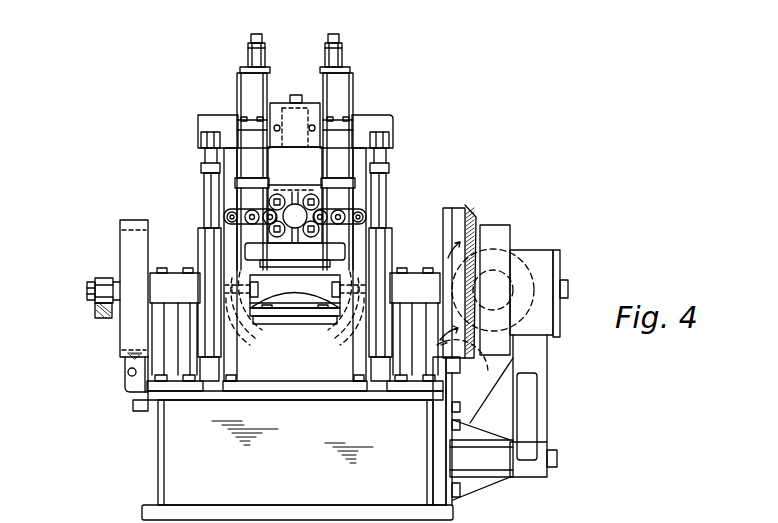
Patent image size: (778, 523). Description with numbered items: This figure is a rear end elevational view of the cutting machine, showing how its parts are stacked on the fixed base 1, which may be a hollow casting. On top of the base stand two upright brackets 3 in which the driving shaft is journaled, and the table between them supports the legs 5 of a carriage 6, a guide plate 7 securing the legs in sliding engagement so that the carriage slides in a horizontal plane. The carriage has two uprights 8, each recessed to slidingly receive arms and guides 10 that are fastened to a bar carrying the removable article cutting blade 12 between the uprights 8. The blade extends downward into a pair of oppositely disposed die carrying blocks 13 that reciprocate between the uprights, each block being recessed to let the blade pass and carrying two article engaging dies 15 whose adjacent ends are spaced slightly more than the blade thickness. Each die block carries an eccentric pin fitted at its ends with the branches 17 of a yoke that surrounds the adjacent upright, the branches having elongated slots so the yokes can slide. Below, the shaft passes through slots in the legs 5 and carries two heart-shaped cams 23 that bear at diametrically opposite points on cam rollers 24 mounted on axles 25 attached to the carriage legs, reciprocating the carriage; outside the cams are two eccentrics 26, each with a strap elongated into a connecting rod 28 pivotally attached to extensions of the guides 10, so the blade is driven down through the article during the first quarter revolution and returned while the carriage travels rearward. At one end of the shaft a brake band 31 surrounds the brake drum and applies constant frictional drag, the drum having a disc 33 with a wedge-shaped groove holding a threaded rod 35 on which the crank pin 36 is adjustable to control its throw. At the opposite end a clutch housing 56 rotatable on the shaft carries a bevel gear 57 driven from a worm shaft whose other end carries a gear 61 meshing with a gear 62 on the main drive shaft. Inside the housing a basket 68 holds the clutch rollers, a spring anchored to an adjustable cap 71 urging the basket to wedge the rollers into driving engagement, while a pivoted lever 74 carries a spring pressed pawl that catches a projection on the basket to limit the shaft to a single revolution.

The fixed base 1 is at (172, 459).
The upright brackets 3 is at (167, 283).
The legs 5 is at (256, 302).
The carriage 6 is at (229, 224).
The guide plate 7 is at (297, 326).
The uprights 8 is at (338, 100).
The guides 10 is at (372, 123).
The article cutting blade 12 is at (335, 110).
The die carrying blocks 13 is at (305, 240).
The article engaging dies 15 is at (268, 207).
The branches 17 is at (232, 211).
The heart-shaped cams 23 is at (232, 322).
The cam rollers 24 is at (243, 325).
The axles 25 is at (248, 316).
The eccentrics 26 is at (203, 252).
The connecting rod 28 is at (386, 158).
The brake band 31 is at (127, 373).
The disc 33 is at (120, 305).
The threaded rod 35 is at (95, 311).
The crank pin 36 is at (87, 290).
The clutch housing 56 is at (494, 237).
The bevel gear 57 is at (472, 214).
The gear 61 is at (557, 257).
The gear 62 is at (478, 376).
The basket 68 is at (530, 256).
The cap 71 is at (563, 279).
The pivoted lever 74 is at (530, 357).